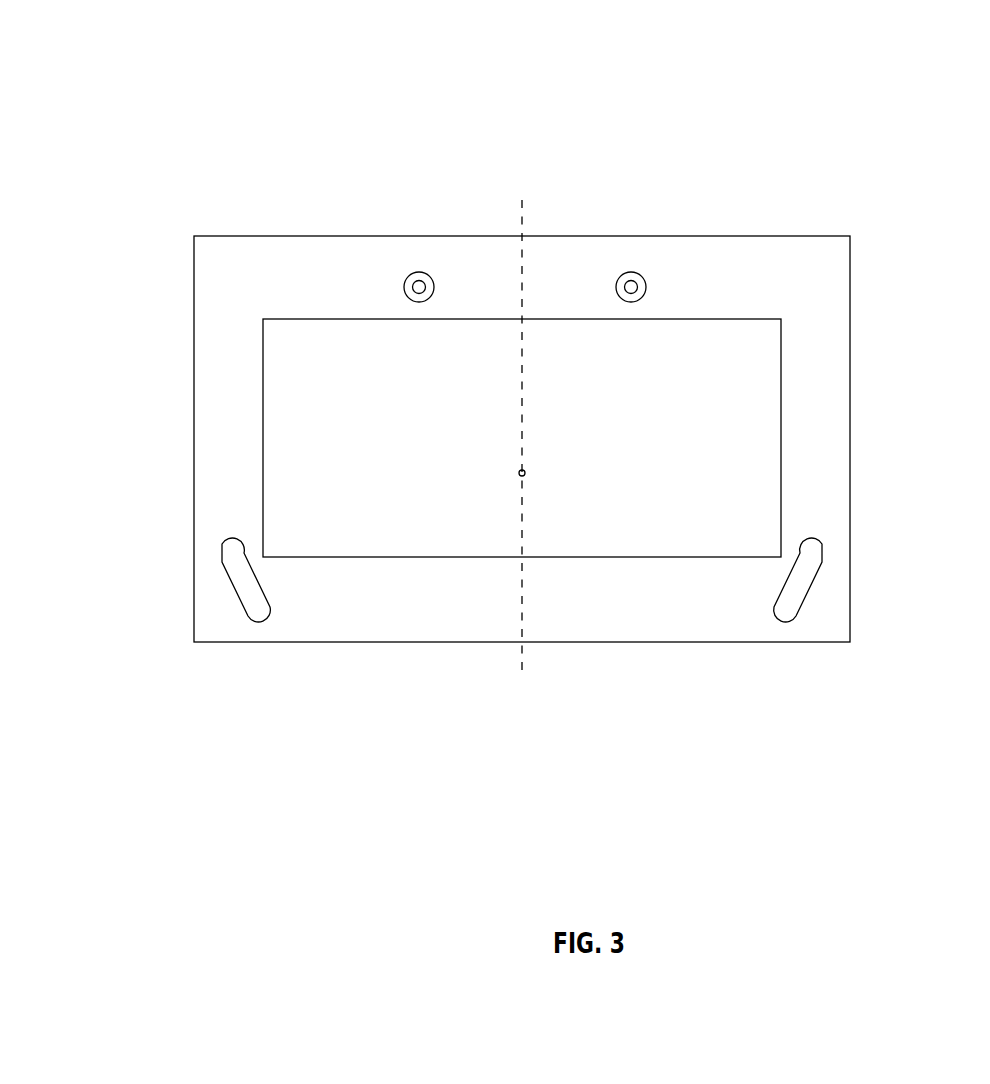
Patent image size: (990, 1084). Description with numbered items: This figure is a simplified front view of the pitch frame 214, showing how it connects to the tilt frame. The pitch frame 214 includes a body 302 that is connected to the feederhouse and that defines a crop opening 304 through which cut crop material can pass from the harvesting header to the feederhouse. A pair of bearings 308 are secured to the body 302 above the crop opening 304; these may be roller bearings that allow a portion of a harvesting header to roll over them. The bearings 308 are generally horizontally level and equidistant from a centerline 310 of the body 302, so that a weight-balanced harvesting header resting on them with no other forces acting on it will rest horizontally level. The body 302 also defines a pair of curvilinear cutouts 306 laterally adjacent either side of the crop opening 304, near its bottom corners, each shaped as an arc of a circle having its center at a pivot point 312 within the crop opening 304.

The pitch frame 214 is at (795, 119).
The body 302 is at (217, 259).
The crop opening 304 is at (743, 368).
The curvilinear cutouts 306 is at (247, 588).
The bearings 308 is at (430, 272).
The centerline 310 is at (522, 679).
The pivot point 312 is at (520, 477).